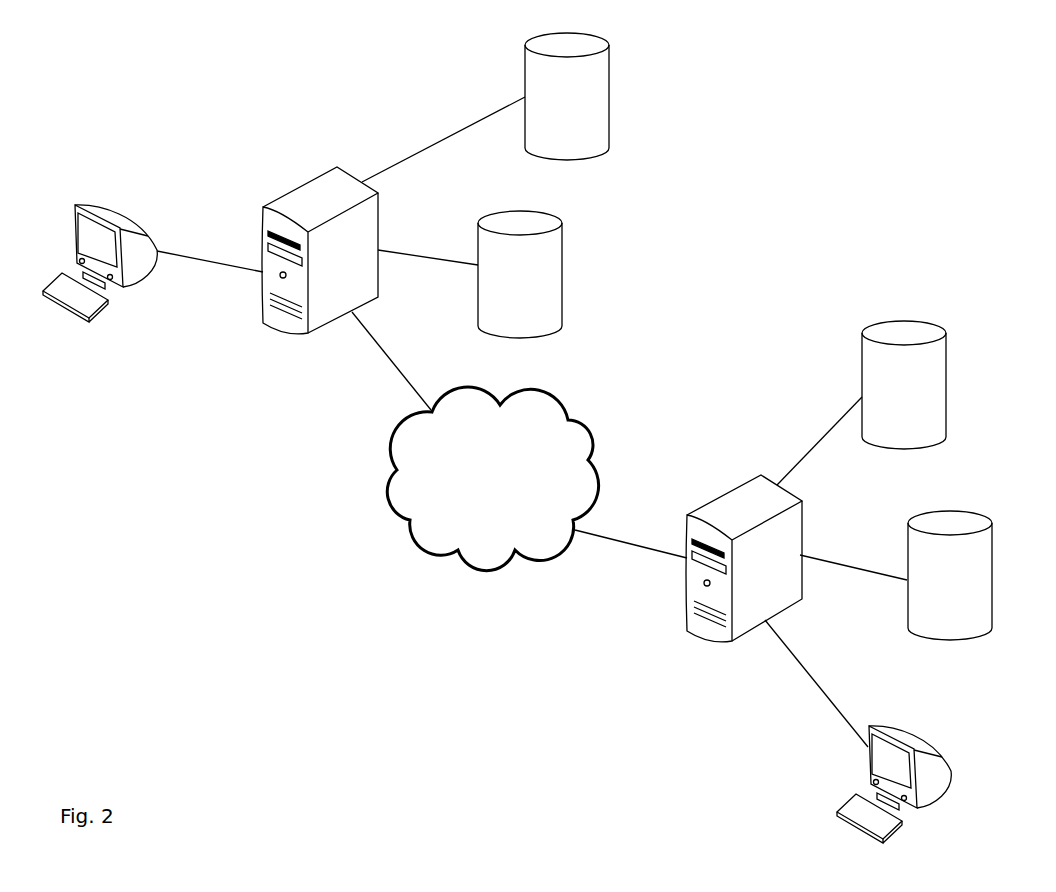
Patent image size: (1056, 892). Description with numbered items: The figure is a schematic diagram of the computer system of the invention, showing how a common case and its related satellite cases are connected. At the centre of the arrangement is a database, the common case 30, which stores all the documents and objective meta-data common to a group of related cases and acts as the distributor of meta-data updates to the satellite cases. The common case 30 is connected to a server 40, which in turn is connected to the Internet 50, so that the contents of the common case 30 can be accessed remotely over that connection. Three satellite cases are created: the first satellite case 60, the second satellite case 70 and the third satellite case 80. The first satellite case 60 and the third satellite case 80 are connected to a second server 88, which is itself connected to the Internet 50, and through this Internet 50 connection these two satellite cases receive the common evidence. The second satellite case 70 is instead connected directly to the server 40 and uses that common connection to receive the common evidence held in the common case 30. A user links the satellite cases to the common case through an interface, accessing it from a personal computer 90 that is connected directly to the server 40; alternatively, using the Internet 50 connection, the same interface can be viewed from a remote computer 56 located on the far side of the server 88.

The common case database 30 is at (520, 290).
The server 40 is at (320, 278).
The Internet 50 is at (504, 479).
The remote viewing computer 56 is at (894, 784).
The satellite 1 case 60 is at (904, 401).
The satellite 2 case 70 is at (567, 112).
The satellite 3 case 80 is at (949, 591).
The server 88 is at (740, 565).
The personal computer 90 is at (100, 276).